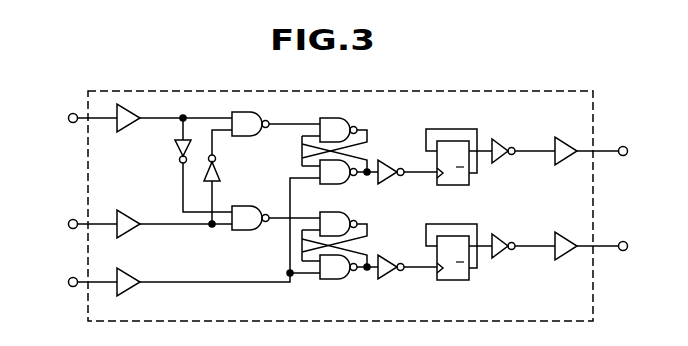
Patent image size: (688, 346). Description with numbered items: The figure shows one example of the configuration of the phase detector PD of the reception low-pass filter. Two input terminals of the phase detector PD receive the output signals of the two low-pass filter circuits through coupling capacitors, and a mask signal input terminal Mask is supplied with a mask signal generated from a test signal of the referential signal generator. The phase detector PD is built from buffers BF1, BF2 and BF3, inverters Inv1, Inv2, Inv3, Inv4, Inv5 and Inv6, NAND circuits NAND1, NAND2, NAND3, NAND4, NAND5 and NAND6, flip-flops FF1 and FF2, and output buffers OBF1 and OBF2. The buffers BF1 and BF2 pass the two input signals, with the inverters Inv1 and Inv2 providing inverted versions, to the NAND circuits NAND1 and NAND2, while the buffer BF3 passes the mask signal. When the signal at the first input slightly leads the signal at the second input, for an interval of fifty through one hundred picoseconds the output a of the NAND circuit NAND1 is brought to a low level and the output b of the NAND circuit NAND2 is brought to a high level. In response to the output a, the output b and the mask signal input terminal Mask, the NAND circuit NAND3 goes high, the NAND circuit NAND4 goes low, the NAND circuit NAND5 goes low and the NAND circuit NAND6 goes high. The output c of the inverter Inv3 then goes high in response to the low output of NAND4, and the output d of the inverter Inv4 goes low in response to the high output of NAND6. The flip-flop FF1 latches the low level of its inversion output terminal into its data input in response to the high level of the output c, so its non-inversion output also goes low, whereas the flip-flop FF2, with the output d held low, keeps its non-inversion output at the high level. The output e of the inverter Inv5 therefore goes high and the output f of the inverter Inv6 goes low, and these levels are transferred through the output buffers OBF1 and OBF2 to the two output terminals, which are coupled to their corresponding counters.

The phase detector PD is at (152, 91).
The mask signal input terminal Mask is at (69, 282).
The buffer BF1 is at (173, 126).
The buffer BF2 is at (173, 232).
The buffer BF3 is at (217, 245).
The inverter Inv1 is at (182, 165).
The inverter Inv2 is at (232, 177).
The NAND circuit NAND1 is at (243, 115).
The NAND circuit NAND2 is at (243, 227).
The NAND circuit NAND3 is at (334, 132).
The NAND circuit NAND4 is at (334, 172).
The NAND circuit NAND5 is at (334, 228).
The NAND circuit NAND6 is at (334, 269).
The output of NAND circuit NAND1 a is at (294, 114).
The output of NAND circuit NAND2 b is at (294, 208).
The inverter Inv3 is at (384, 164).
The inverter Inv4 is at (384, 259).
The output of inverter Inv3 c is at (420, 184).
The output of inverter Inv4 d is at (420, 278).
The flip-flop FF1 is at (459, 165).
The flip-flop FF2 is at (459, 261).
The inverter Inv5 is at (500, 142).
The inverter Inv6 is at (502, 237).
The output of inverter Inv5 e is at (535, 142).
The output of inverter Inv6 f is at (535, 237).
The output buffer OBF1 is at (578, 142).
The output buffer OBF2 is at (578, 238).